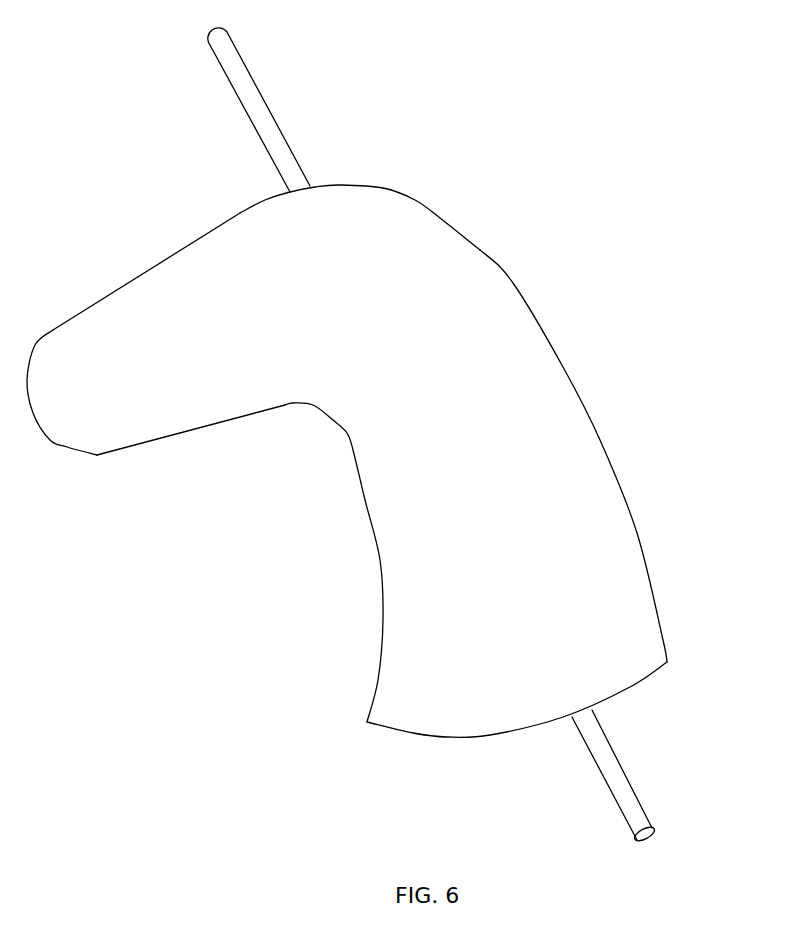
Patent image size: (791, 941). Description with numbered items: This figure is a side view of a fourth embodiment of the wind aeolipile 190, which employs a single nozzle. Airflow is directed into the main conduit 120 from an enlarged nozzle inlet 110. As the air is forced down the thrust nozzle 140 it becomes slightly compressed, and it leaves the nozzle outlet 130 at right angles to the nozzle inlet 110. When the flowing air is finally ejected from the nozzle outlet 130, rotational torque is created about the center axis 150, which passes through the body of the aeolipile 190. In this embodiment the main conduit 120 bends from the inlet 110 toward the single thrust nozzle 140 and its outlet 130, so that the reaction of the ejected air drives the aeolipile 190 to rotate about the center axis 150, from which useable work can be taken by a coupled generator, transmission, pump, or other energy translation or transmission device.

The nozzle inlet 110 is at (492, 735).
The main conduit 120 is at (618, 545).
The nozzle outlet 130 is at (35, 423).
The thrust nozzle 140 is at (188, 245).
The center axis 150 is at (628, 778).
The aeolipile 190 is at (383, 487).